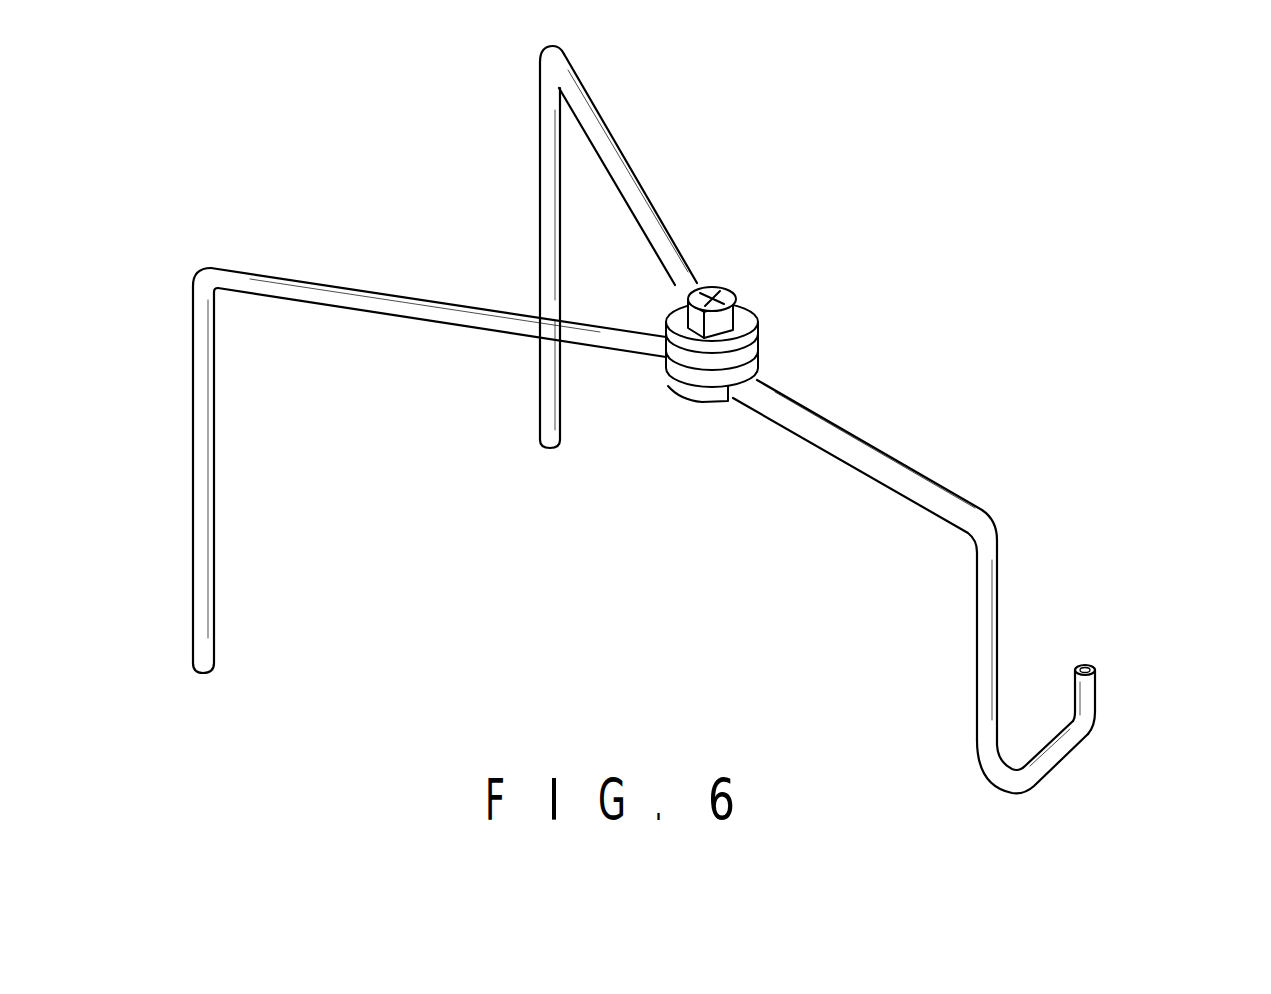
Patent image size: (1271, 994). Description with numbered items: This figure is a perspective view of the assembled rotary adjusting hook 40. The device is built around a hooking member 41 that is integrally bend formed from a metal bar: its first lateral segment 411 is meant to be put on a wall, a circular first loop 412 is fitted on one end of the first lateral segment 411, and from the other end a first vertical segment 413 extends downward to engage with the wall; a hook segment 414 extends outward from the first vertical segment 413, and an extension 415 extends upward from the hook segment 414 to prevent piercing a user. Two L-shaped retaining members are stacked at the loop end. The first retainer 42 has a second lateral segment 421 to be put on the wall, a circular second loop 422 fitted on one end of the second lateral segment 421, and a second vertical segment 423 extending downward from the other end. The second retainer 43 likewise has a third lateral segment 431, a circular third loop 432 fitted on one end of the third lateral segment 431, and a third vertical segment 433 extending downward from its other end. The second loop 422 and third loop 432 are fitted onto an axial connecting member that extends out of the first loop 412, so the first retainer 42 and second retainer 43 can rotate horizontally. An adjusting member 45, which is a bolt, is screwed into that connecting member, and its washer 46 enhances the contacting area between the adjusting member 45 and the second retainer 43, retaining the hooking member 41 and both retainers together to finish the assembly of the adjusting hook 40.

The rotary adjusting hook 40 is at (705, 407).
The hooking member 41 is at (918, 586).
The first lateral segment 411 is at (873, 467).
The first loop 412 is at (693, 392).
The first vertical segment 413 is at (985, 620).
The hook segment 414 is at (1062, 748).
The extension 415 is at (1087, 692).
The first retainer 42 is at (429, 470).
The second lateral segment 421 is at (468, 315).
The second loop 422 is at (753, 377).
The second vertical segment 423 is at (208, 552).
The second retainer 43 is at (580, 234).
The third lateral segment 431 is at (645, 215).
The third loop 432 is at (758, 347).
The third vertical segment 433 is at (547, 168).
The adjusting member 45 is at (722, 285).
The washer 46 is at (757, 320).